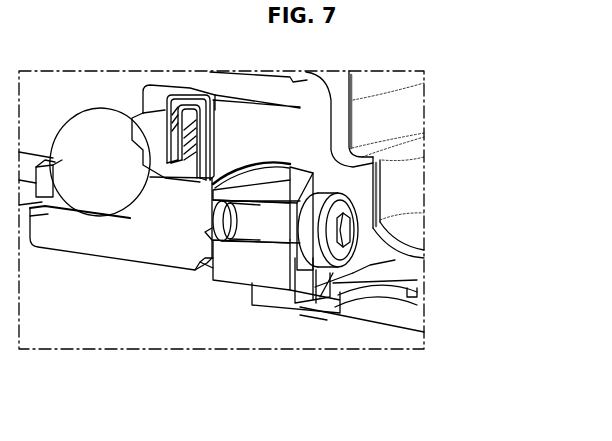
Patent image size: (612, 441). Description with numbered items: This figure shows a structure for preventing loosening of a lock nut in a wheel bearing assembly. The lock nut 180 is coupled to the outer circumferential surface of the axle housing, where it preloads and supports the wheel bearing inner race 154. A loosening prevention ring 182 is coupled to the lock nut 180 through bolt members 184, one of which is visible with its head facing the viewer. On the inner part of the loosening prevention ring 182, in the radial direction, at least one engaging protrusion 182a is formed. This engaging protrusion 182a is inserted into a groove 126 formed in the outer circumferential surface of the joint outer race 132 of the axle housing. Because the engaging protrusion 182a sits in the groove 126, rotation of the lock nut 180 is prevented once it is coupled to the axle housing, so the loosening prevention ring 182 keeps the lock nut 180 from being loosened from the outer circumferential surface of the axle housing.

The wheel bearing inner race 154 is at (160, 238).
The lock nut 180 is at (246, 268).
The loosening prevention ring 182 is at (338, 172).
The engaging protrusion 182a is at (316, 292).
The bolt member 184 is at (352, 245).
The groove 126 is at (366, 300).
The joint outer race 132 is at (402, 312).